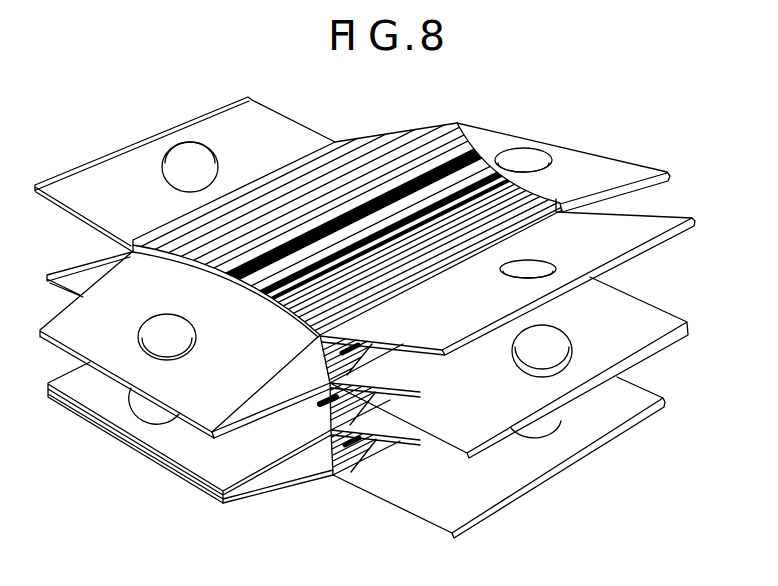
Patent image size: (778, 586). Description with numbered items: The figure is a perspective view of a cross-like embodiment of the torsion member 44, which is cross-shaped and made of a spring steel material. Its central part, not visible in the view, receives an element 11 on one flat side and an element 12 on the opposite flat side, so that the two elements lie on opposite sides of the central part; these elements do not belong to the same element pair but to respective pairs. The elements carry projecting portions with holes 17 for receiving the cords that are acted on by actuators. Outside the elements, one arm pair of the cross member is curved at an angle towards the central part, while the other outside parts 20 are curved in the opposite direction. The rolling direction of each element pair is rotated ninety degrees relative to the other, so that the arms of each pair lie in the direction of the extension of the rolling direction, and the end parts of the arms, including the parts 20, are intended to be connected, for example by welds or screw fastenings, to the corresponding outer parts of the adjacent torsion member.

The element 11 is at (334, 437).
The element 12 is at (403, 135).
The holes 17 is at (180, 157).
The outside parts 20 is at (85, 185).
The torsion member 44 is at (313, 127).